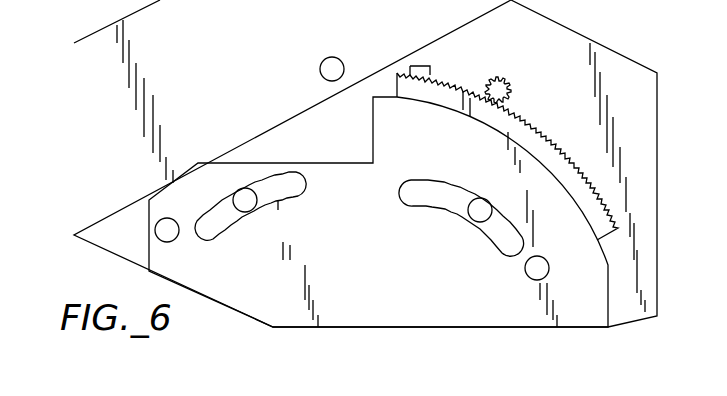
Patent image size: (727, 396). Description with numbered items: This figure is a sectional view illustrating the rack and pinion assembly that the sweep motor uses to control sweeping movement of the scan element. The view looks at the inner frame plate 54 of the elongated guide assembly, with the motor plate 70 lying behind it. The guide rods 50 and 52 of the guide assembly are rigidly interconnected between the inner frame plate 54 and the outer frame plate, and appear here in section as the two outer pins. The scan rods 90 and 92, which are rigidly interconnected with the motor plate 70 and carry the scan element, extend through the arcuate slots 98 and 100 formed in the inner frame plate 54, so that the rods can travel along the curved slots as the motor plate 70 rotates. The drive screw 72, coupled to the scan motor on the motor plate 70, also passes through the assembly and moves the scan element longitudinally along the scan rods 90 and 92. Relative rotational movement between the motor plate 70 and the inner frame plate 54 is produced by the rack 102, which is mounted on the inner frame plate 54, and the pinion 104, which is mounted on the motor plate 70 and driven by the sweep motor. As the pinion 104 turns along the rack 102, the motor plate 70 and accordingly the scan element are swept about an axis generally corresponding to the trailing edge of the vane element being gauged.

The motor plate 70 is at (178, 60).
The drive screw 72 is at (322, 59).
The pinion 104 is at (509, 80).
The rack 102 is at (518, 111).
The arcuate slot 98 is at (257, 208).
The scan rod 90 is at (259, 211).
The arcuate slot 100 is at (455, 208).
The scan rod 92 is at (484, 201).
The guide rod 50 is at (176, 238).
The guide rod 52 is at (542, 258).
The inner frame plate 54 is at (390, 291).